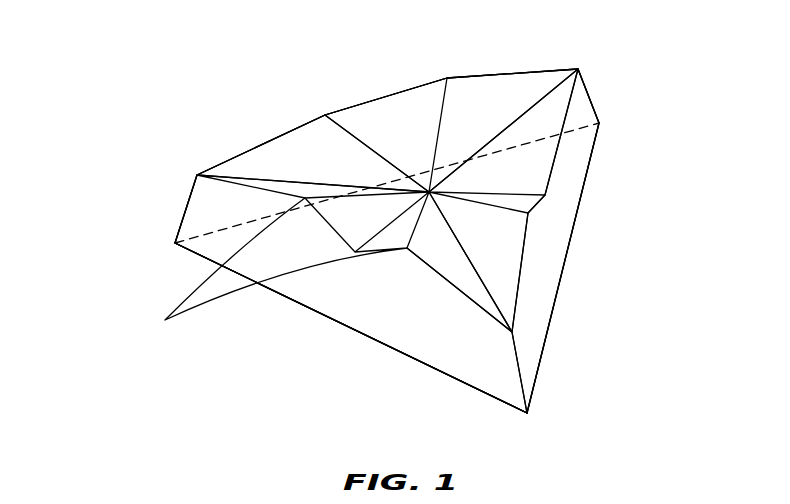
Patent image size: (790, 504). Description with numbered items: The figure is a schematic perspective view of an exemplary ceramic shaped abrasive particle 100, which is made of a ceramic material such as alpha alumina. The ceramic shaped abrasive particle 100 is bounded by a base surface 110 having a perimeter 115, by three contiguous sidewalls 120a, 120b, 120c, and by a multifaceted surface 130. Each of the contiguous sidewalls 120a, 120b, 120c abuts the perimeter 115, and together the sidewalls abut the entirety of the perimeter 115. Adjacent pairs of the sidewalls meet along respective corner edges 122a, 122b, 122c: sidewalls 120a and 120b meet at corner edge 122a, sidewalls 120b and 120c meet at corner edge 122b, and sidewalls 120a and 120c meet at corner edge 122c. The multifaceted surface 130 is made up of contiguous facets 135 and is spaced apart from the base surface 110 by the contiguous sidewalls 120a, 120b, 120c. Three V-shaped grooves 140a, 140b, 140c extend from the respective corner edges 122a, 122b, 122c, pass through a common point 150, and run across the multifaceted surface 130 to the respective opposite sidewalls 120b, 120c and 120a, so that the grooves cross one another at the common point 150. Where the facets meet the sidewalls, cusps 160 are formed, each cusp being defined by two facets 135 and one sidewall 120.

The ceramic shaped abrasive particle 100 is at (137, 51).
The base surface 110 is at (557, 292).
The perimeter 115 is at (569, 240).
The sidewall 120 is at (576, 264).
The contiguous sidewall 120a is at (572, 155).
The contiguous sidewall 120b is at (233, 157).
The contiguous sidewall 120c is at (406, 324).
The corner edge 122a is at (588, 88).
The corner edge 122b is at (185, 207).
The corner edge 122c is at (520, 377).
The multifaceted surface 130 is at (508, 88).
The contiguous facets 135 is at (367, 132).
The V-shaped groove 140a is at (546, 93).
The V-shaped groove 140b is at (285, 182).
The V-shaped groove 140c is at (497, 298).
The common point 150 is at (442, 190).
The cusps 160 is at (166, 319).